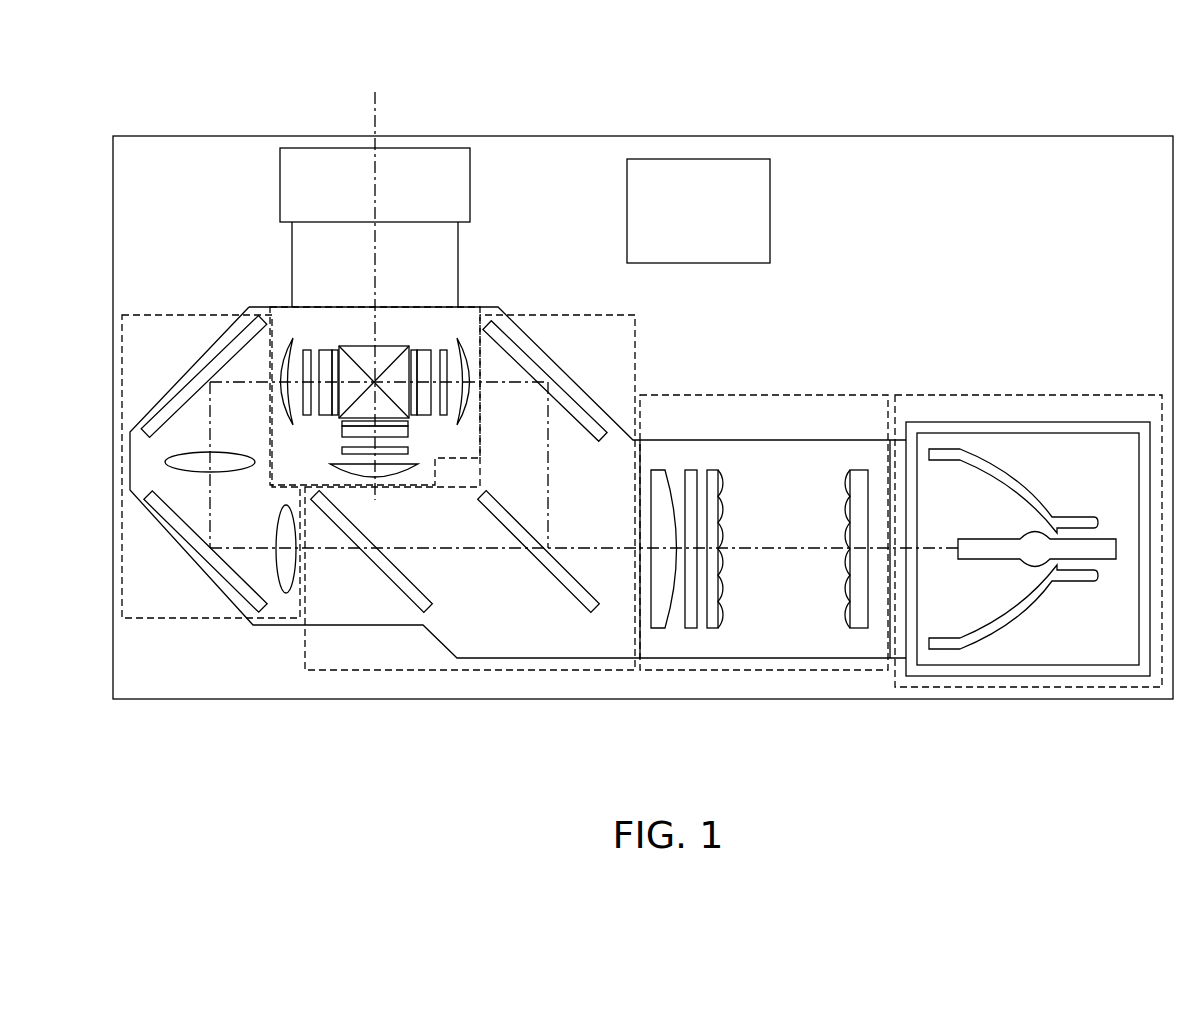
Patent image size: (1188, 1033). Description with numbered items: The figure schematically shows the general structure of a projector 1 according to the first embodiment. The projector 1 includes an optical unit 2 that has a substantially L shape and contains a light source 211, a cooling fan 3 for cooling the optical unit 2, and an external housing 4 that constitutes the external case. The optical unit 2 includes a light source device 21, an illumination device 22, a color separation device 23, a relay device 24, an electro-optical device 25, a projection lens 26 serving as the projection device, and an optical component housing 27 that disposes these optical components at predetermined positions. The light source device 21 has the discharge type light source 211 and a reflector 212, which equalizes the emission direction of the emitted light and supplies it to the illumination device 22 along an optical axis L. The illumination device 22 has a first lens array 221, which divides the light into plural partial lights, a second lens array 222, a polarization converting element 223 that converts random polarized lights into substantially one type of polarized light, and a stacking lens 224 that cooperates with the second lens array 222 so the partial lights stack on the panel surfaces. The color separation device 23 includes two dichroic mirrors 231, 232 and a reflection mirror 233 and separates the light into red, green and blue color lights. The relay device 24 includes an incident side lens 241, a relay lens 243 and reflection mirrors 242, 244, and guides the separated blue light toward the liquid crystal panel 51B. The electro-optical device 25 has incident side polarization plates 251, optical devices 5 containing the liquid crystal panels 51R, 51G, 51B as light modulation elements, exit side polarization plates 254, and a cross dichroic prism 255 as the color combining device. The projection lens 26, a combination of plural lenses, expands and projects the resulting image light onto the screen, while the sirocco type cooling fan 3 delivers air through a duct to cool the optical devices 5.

The projector 1 is at (924, 88).
The optical unit 2 is at (786, 310).
The cooling fan 3 is at (700, 159).
The external housing 4 is at (1063, 136).
The optical devices 5 is at (375, 391).
The light source device 21 is at (1028, 583).
The light source 211 is at (988, 553).
The reflector 212 is at (1022, 610).
The illumination device 22 is at (770, 543).
The first lens array 221 is at (858, 470).
The second lens array 222 is at (712, 470).
The polarization converting element 223 is at (691, 470).
The stacking lens 224 is at (660, 470).
The color separation device 23 is at (470, 534).
The dichroic mirror 231 is at (560, 572).
The dichroic mirror 232 is at (390, 572).
The reflection mirror 233 is at (578, 400).
The relay device 24 is at (164, 494).
The incident side lens 241 is at (285, 577).
The reflection mirror 242 is at (168, 513).
The relay lens 243 is at (228, 465).
The reflection mirror 244 is at (183, 400).
The electro-optical device 25 is at (375, 377).
The incident side polarization plates 251 is at (307, 350).
The exit side polarization plates 254 is at (335, 350).
The cross dichroic prism 255 is at (366, 348).
The liquid crystal panel for B light 51B is at (327, 350).
The liquid crystal panel for R light 51R is at (427, 348).
The liquid crystal panel for G light 51G is at (397, 432).
The projection lens 26 is at (460, 192).
The optical component housing 27 is at (423, 628).
The optical axis L is at (810, 546).